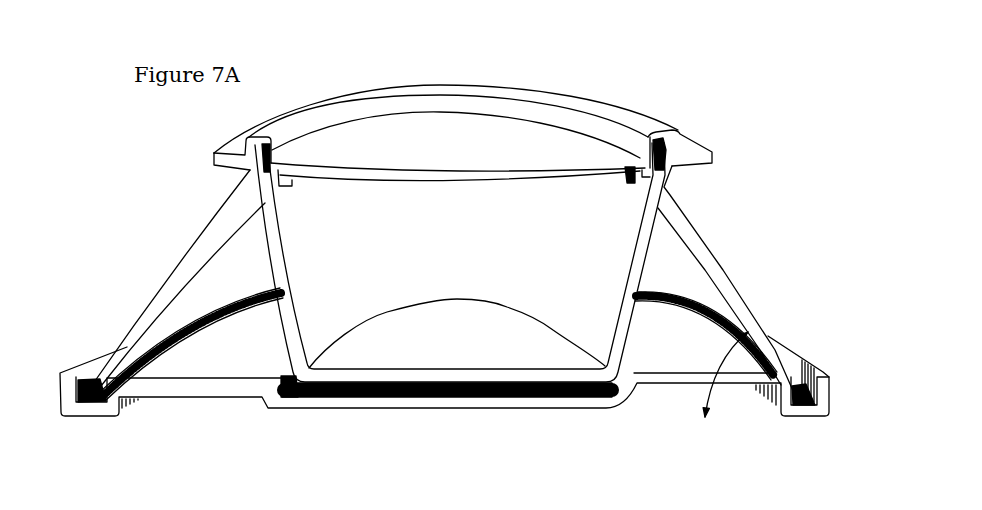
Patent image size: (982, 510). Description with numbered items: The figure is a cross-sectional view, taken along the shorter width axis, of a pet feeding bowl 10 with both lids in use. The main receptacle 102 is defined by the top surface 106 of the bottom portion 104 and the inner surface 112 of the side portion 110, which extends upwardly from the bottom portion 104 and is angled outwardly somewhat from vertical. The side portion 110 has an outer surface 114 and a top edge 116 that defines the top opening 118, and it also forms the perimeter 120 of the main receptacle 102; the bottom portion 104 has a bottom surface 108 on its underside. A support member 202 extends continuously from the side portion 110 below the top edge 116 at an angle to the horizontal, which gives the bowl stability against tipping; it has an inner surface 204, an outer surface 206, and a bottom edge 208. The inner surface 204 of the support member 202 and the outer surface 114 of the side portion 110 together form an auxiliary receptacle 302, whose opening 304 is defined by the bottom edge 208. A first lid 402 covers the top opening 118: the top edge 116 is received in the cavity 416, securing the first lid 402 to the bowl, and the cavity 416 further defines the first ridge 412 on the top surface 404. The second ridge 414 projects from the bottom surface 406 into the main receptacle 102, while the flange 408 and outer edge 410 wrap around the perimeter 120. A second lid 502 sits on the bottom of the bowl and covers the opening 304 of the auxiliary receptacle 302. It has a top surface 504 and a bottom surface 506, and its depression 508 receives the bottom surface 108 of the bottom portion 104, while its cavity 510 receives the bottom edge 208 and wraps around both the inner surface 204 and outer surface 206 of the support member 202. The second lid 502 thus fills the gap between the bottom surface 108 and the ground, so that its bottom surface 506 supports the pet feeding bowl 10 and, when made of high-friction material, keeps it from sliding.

The pet feeding bowl 10 is at (412, 73).
The main receptacle 102 is at (425, 318).
The bottom portion 104 is at (372, 338).
The top surface 106 is at (421, 345).
The bottom surface 108 is at (388, 391).
The side portion 110 is at (423, 253).
The inner surface 112 is at (633, 283).
The outer surface 114 is at (636, 321).
The top edge 116 is at (252, 172).
The top opening 118 is at (478, 198).
The perimeter 120 is at (266, 272).
The support member 202 is at (756, 285).
The inner surface 204 is at (655, 287).
The outer surface 206 is at (745, 303).
The bottom edge 208 is at (93, 391).
The auxiliary receptacle 302 is at (187, 308).
The opening 304 is at (177, 367).
The first lid 402 is at (465, 142).
The top surface 404 is at (418, 154).
The bottom surface 406 is at (557, 193).
The flange 408 is at (242, 148).
The outer edge 410 is at (710, 153).
The first ridge 412 is at (302, 112).
The second ridge 414 is at (285, 188).
The cavity 416 is at (664, 143).
The second lid 502 is at (457, 411).
The top surface 504 is at (202, 361).
The bottom surface 506 is at (243, 412).
The depression 508 is at (335, 394).
The cavity 510 is at (806, 378).